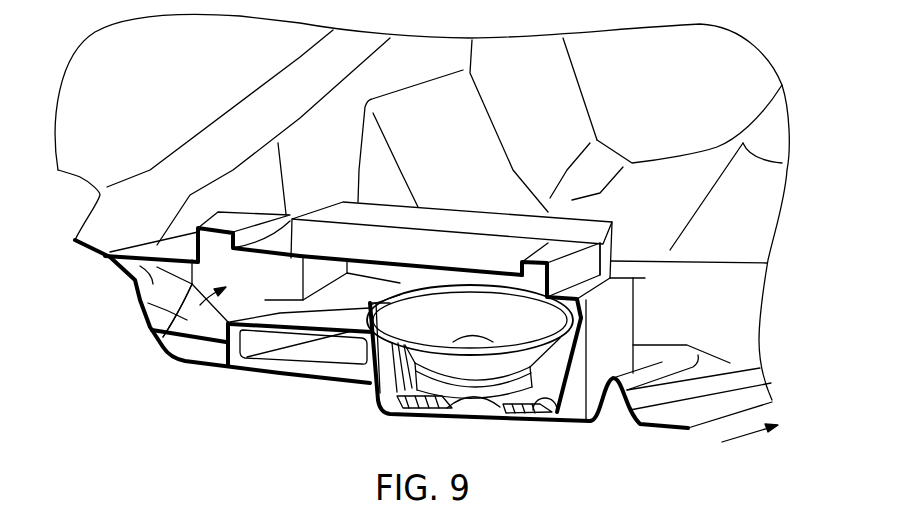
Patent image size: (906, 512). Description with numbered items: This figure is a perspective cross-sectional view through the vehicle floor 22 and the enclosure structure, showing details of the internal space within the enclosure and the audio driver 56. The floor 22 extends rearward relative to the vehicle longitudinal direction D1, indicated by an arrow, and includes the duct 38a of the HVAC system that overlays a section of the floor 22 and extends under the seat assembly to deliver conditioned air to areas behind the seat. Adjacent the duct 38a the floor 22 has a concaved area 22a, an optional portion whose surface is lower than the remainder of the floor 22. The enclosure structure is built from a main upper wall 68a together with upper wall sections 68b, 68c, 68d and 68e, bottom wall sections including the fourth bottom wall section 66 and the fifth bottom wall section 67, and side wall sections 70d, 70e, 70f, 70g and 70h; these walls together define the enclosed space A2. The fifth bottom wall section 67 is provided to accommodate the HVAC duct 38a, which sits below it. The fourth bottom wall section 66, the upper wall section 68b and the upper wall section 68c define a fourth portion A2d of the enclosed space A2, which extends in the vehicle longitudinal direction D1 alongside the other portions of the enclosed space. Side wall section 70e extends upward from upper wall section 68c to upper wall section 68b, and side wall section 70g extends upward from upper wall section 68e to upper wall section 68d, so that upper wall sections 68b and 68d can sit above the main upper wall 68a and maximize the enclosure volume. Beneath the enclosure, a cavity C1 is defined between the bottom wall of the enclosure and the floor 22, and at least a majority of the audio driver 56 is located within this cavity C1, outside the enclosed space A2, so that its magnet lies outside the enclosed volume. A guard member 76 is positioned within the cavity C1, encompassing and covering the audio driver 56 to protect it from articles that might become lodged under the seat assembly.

The side wall section 70d is at (140, 301).
The upper wall section 68c is at (177, 249).
The side wall section 70e is at (206, 221).
The upper wall section 68b is at (223, 211).
The main upper wall 68a is at (317, 234).
The side wall section 70f is at (387, 270).
The upper wall section 68d is at (524, 258).
The side wall section 70g is at (590, 265).
The upper wall section 68e is at (612, 280).
The side wall section 70h is at (615, 318).
The fifth bottom wall section 67 is at (253, 322).
The fourth bottom wall section 66 is at (225, 366).
The duct 38a is at (250, 342).
The guard member 76 is at (414, 400).
The audio driver 56 is at (473, 396).
The concaved area 22a is at (521, 414).
The cavity C1 is at (599, 421).
The floor 22 is at (687, 420).
The vehicle longitudinal direction D1 is at (743, 438).
The enclosed space A2 is at (178, 362).
The fourth portion of the enclosed space A2d is at (150, 336).